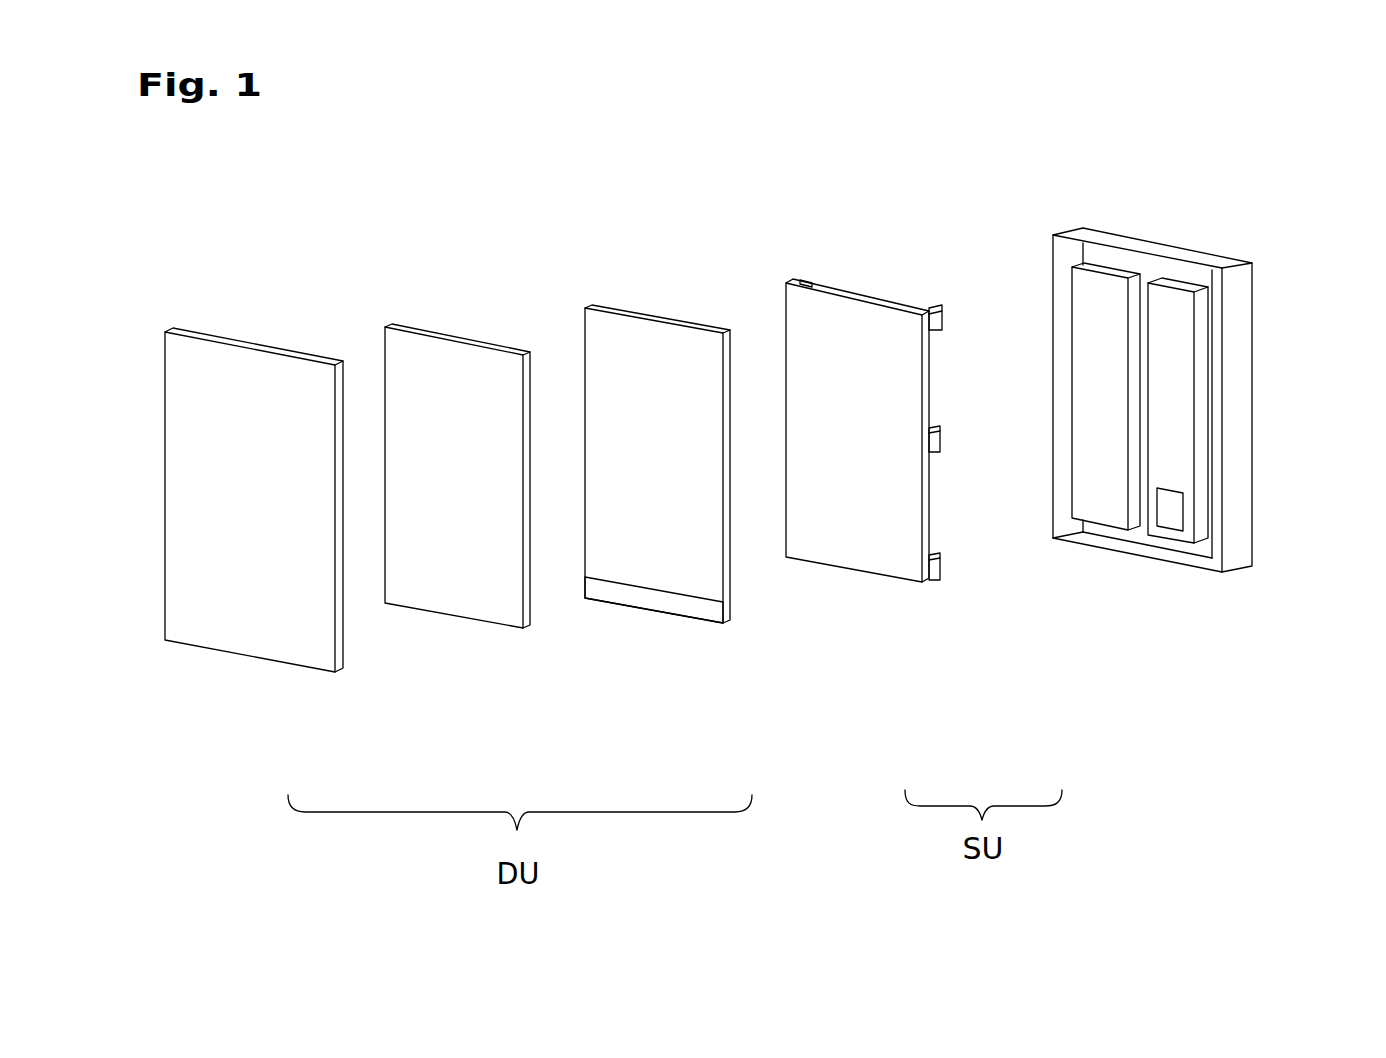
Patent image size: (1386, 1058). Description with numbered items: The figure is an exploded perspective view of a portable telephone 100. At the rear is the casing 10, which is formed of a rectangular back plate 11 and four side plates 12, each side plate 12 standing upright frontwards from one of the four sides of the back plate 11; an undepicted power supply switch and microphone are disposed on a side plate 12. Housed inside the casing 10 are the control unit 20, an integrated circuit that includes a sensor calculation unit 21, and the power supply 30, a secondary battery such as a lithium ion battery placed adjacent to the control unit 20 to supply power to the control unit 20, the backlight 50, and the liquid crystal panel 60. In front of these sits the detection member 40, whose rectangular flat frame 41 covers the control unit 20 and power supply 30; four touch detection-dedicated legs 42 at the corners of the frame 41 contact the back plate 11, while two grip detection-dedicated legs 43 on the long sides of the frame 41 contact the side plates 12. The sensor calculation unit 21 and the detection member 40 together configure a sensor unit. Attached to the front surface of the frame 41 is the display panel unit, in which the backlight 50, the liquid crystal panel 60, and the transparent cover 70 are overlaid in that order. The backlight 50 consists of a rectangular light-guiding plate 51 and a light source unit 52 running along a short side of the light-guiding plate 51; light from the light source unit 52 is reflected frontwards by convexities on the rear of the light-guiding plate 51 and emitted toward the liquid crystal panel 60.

The portable telephone 100 is at (560, 232).
The transparent cover 70 is at (293, 670).
The liquid crystal panel 60 is at (465, 607).
The backlight 50 is at (657, 554).
The light-guiding plate 51 is at (640, 543).
The light source unit 52 is at (692, 605).
The detection member 40 is at (896, 495).
The frame 41 is at (862, 545).
The touch detection-dedicated leg 42 is at (806, 283).
The grip detection-dedicated leg 43 is at (942, 437).
The casing 10 is at (1173, 426).
The back plate 11 is at (1157, 270).
The side plate 12 is at (1053, 352).
The control unit 20 is at (1176, 532).
The sensor calculation unit 21 is at (1165, 512).
The power supply 30 is at (1112, 300).